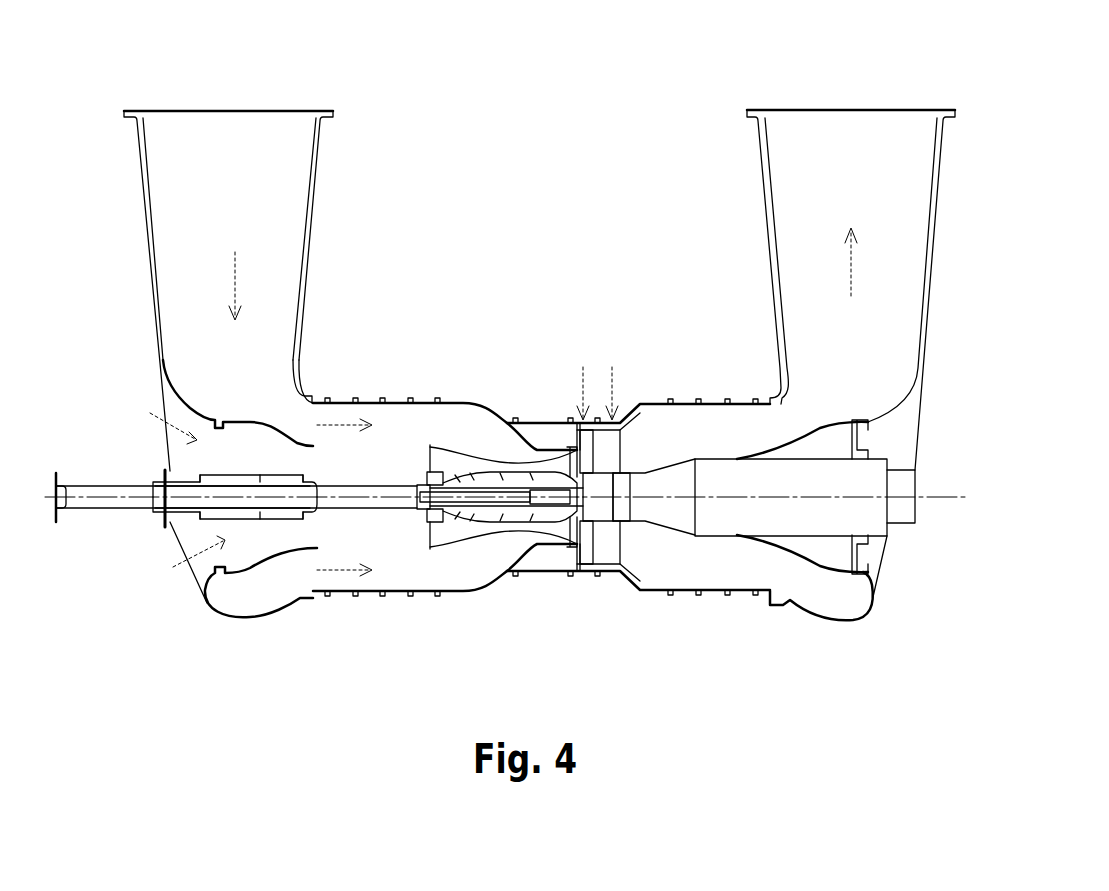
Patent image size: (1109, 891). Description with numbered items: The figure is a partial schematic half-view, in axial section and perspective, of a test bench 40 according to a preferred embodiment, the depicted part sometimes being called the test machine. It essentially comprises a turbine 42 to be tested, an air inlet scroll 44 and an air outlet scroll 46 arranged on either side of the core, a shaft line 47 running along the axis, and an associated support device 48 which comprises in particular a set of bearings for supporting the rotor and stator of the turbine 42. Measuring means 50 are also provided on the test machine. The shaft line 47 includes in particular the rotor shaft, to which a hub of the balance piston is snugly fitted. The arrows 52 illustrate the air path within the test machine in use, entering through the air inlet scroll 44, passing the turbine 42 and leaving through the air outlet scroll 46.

The test bench 40 is at (703, 78).
The turbine 42 is at (561, 416).
The air inlet scroll 44 is at (222, 171).
The air outlet scroll 46 is at (838, 182).
The shaft line 47 is at (388, 520).
The support device 48 is at (489, 455).
The measuring means 50 is at (257, 545).
The arrows 52 is at (235, 267).